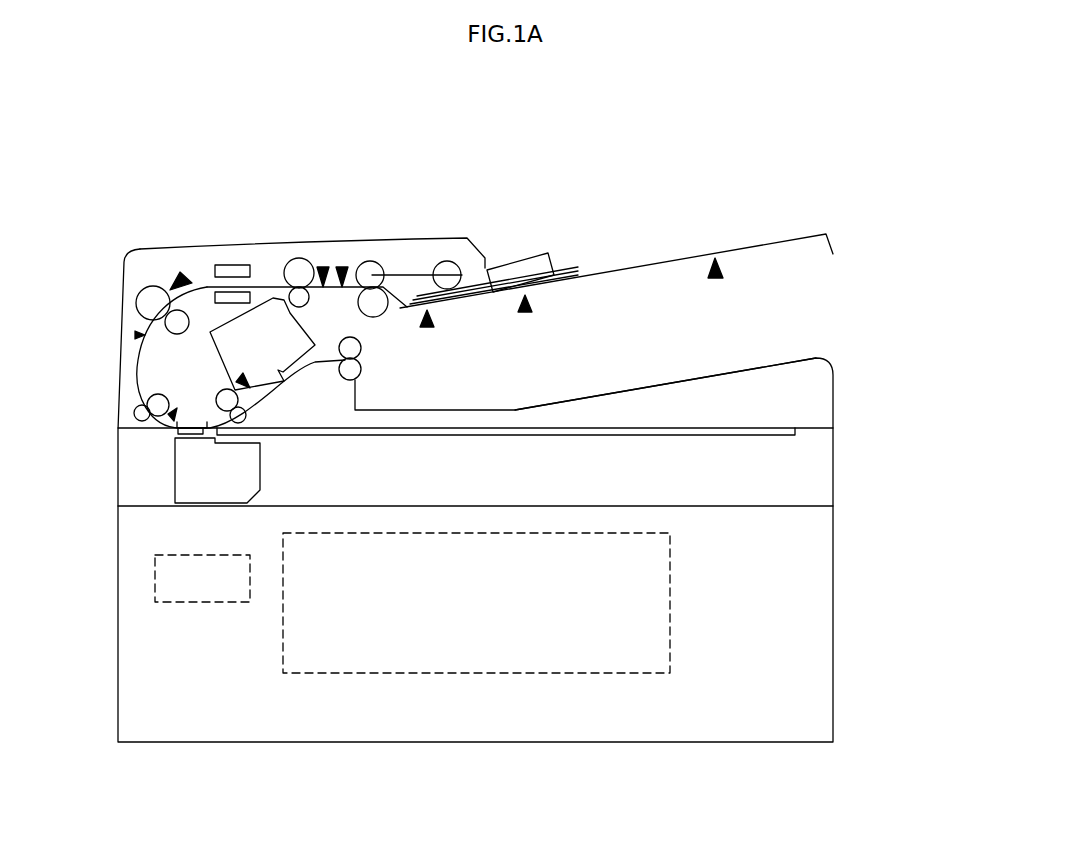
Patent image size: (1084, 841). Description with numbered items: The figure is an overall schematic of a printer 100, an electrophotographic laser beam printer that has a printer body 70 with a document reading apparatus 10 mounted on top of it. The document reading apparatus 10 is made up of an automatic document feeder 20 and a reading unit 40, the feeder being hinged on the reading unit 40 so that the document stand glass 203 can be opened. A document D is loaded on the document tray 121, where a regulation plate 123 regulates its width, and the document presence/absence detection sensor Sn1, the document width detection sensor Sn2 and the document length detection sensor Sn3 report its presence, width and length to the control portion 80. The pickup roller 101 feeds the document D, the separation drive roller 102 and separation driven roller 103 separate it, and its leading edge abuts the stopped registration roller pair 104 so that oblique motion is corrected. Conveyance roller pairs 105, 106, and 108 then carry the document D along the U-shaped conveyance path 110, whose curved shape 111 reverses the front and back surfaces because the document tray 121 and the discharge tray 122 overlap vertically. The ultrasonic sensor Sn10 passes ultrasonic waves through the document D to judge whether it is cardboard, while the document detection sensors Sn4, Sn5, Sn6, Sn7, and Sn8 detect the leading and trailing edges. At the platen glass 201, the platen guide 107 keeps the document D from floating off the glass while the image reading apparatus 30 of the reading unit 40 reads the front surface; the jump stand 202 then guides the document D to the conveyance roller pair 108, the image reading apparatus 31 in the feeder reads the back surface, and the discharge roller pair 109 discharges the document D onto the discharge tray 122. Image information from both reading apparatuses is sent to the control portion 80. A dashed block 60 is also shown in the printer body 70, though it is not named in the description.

The printer 100 is at (733, 157).
The document reading apparatus 10 is at (908, 235).
The automatic document feeder 20 is at (846, 280).
The reading unit 40 is at (846, 446).
The printer body 70 is at (846, 519).
The image reading apparatus 30 is at (173, 498).
The image reading apparatus 31 is at (308, 334).
The sheet cassette 60 is at (675, 590).
The control portion 80 is at (155, 570).
The pickup roller 101 is at (480, 266).
The separation drive roller 102 is at (388, 260).
The separation driven roller 103 is at (383, 316).
The registration roller pair 104 is at (300, 257).
The conveyance roller pair 105 is at (153, 285).
The conveyance roller pair 106 is at (140, 418).
The platen guide 107 is at (185, 420).
The conveyance roller pair 108 is at (222, 392).
The discharge roller pair 109 is at (363, 372).
The conveyance path 110 is at (137, 335).
The curved shape 111 is at (137, 362).
The document tray 121 is at (800, 235).
The discharge tray 122 is at (680, 385).
The regulation plate 123 is at (535, 266).
The platen glass 201 is at (178, 435).
The jump stand 202 is at (207, 426).
The document stand glass 203 is at (443, 437).
The document D is at (575, 268).
The document presence/absence detection sensor Sn1 is at (436, 320).
The document width detection sensor Sn2 is at (533, 305).
The document length detection sensor Sn3 is at (724, 270).
The document detection sensor Sn4 is at (356, 265).
The document detection sensor Sn5 is at (326, 265).
The document detection sensor Sn6 is at (178, 275).
The document detection sensor Sn7 is at (172, 415).
The document detection sensor Sn8 is at (245, 378).
The ultrasonic sensor Sn10 is at (233, 262).